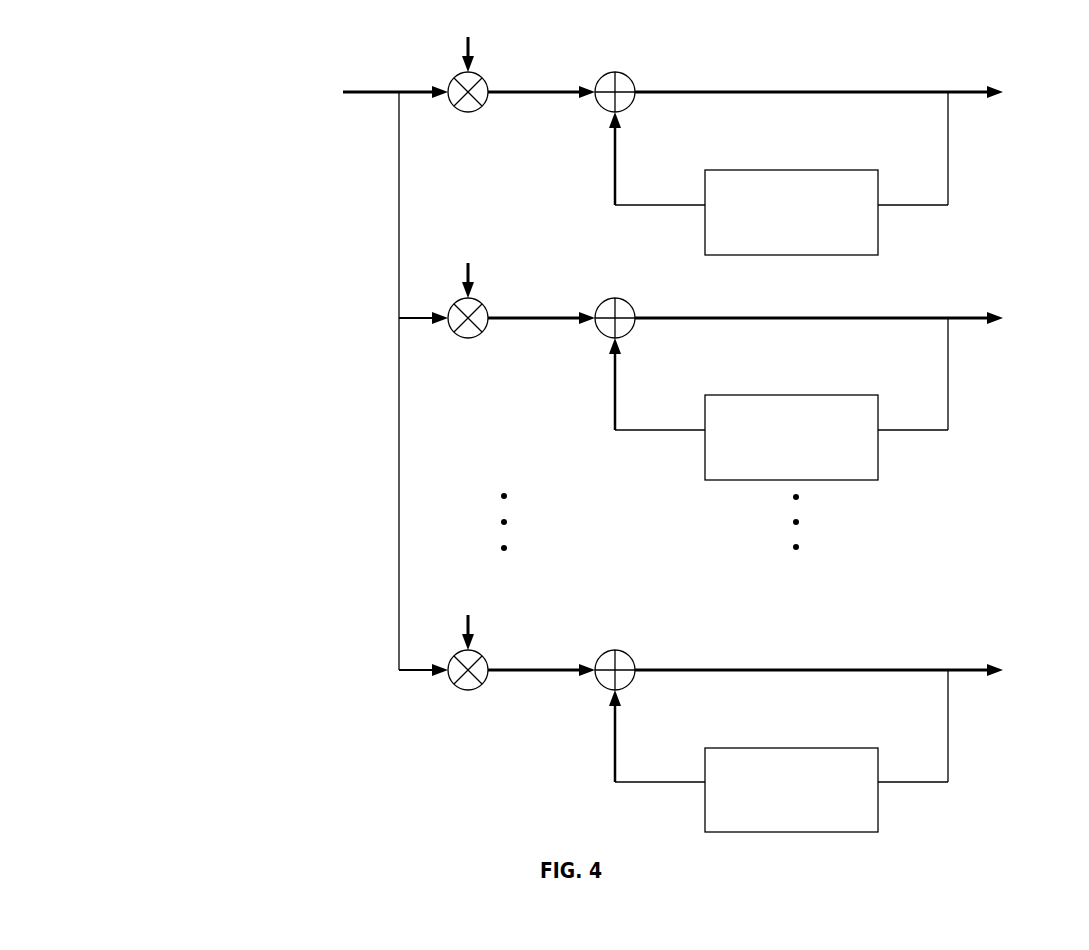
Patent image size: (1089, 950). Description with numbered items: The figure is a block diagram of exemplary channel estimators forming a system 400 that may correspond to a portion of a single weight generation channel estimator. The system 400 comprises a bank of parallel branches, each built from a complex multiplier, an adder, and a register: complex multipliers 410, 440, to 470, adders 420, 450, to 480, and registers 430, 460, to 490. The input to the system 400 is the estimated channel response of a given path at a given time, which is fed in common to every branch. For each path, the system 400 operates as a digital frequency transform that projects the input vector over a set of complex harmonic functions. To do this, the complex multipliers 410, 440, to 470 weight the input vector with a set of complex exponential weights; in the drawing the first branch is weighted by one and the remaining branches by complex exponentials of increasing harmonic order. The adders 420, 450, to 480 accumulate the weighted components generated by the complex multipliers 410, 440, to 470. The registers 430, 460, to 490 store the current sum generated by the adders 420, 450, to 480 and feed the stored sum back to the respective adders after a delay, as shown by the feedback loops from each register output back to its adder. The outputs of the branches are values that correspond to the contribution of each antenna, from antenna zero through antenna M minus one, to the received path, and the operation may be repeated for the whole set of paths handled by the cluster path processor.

The system 400 is at (298, 472).
The complex multiplier 410 is at (493, 83).
The adder 420 is at (642, 83).
The register 430 is at (890, 230).
The complex multiplier 440 is at (493, 308).
The adder 450 is at (642, 308).
The register 460 is at (890, 458).
The complex multiplier 470 is at (490, 655).
The adder 480 is at (640, 655).
The register 490 is at (890, 822).